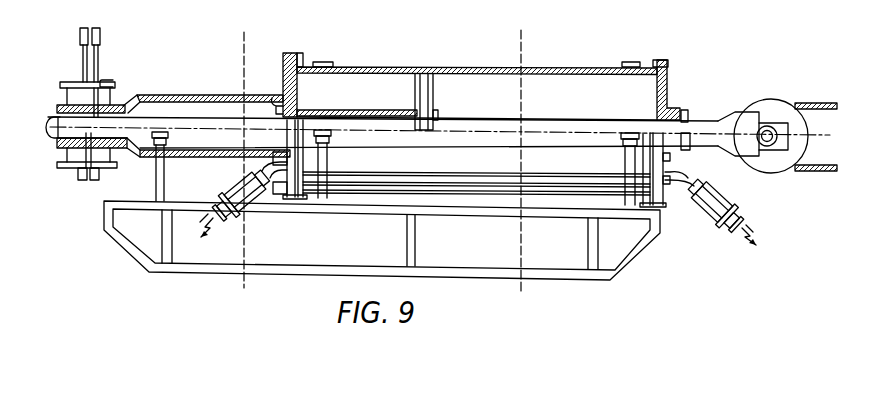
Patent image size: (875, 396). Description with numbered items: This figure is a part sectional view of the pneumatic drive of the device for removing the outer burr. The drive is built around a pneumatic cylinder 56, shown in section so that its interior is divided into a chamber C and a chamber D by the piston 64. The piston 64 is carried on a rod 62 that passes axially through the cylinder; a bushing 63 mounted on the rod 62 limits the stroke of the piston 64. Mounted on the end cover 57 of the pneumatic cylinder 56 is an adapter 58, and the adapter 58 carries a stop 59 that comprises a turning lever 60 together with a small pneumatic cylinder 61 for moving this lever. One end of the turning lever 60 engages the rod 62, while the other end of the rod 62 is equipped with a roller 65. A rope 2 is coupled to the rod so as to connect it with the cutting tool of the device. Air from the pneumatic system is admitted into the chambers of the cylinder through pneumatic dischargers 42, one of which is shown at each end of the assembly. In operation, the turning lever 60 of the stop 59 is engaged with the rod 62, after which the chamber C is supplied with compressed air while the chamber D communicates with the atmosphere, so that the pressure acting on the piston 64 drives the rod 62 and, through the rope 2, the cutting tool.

The rope 2 is at (826, 103).
The pneumatic dischargers 42 is at (233, 185).
The pneumatic cylinder 56 is at (463, 70).
The end cover 57 is at (292, 199).
The adapter 58 is at (179, 96).
The stop 59 is at (73, 71).
The turning lever 60 is at (101, 86).
The pneumatic cylinder 61 is at (72, 154).
The rod 62 is at (306, 120).
The bushing 63 is at (368, 108).
The piston 64 is at (423, 98).
The roller 65 is at (775, 110).
The chamber C is at (304, 78).
The chamber D is at (587, 93).